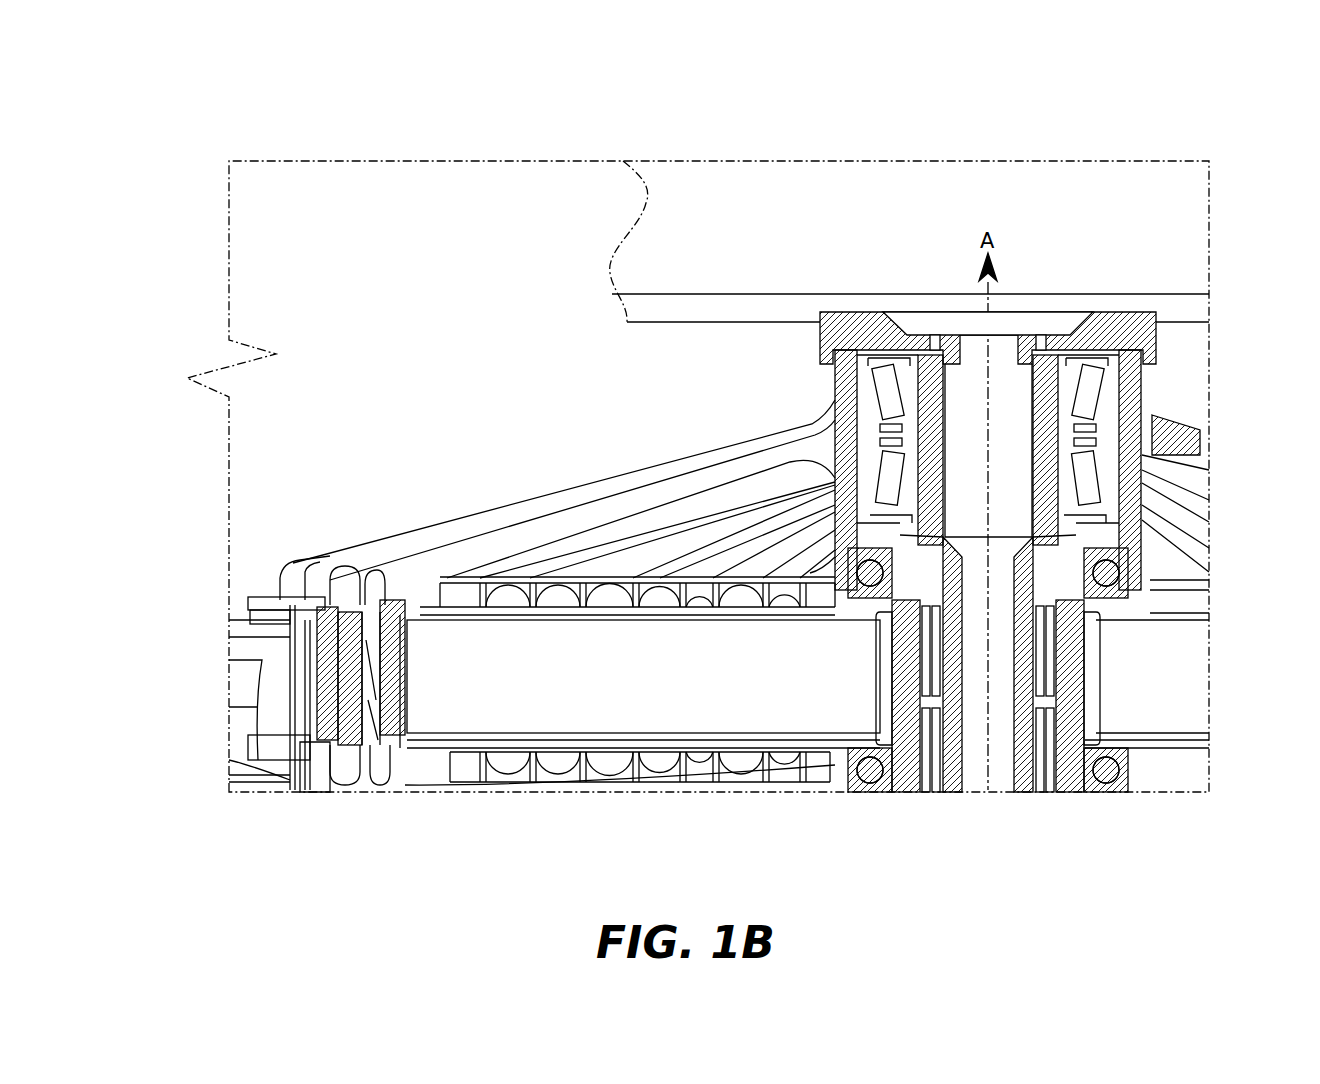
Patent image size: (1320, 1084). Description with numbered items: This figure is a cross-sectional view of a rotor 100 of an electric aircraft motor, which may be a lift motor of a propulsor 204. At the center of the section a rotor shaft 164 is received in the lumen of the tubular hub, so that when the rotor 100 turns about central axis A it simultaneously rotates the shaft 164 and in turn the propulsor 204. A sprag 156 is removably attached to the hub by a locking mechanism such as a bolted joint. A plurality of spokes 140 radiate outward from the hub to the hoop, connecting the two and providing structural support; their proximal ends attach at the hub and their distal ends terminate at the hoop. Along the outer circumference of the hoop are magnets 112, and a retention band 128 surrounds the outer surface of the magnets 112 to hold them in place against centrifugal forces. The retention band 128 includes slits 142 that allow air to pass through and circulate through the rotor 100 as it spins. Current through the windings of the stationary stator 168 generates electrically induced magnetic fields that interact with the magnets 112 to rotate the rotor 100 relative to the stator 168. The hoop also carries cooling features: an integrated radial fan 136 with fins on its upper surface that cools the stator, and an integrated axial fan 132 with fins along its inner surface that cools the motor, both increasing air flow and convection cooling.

The rotor 100 is at (907, 130).
The propulsor 204 is at (1186, 214).
The integrated radial fan 136 is at (383, 557).
The integrated axial fan 132 is at (387, 612).
The retention band 128 is at (370, 630).
The slits 142 is at (330, 707).
The stator 168 is at (318, 768).
The magnets 112 is at (393, 740).
The spokes 140 is at (483, 740).
The rotor shaft 164 is at (1023, 650).
The sprag 156 is at (1107, 772).